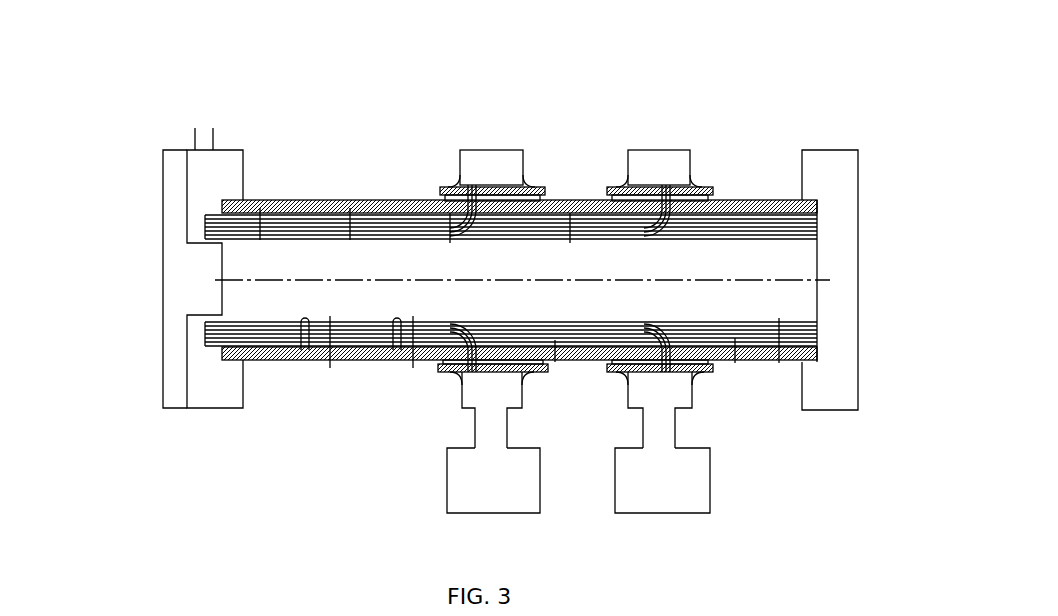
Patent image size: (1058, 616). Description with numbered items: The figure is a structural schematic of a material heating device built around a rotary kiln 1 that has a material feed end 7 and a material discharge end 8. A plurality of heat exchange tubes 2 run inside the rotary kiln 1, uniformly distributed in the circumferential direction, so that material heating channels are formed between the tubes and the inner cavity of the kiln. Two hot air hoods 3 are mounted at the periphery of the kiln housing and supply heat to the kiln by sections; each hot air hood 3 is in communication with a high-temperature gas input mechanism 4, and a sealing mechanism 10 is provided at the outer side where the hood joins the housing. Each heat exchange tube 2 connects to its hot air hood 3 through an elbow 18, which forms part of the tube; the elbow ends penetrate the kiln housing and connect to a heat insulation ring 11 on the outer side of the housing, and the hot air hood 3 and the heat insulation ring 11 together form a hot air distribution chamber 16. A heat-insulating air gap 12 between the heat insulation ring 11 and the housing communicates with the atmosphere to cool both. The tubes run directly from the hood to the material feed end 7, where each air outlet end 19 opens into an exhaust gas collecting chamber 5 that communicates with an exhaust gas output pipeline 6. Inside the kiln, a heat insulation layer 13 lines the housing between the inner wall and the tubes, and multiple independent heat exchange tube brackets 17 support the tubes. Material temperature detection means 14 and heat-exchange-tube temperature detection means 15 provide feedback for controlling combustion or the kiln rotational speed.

The rotary kiln 1 is at (347, 200).
The heat exchange tubes 2 is at (552, 230).
The hot air hood 3 is at (650, 150).
The high-temperature gas input mechanism 4 is at (632, 503).
The exhaust gas collecting chamber 5 is at (222, 177).
The exhaust gas output pipeline 6 is at (203, 140).
The material feed end 7 is at (175, 268).
The material discharge end 8 is at (840, 263).
The sealing mechanism 10 is at (690, 185).
The heat insulation ring 11 is at (702, 373).
The heat-insulating air gap 12 is at (711, 367).
The heat insulation layer 13 is at (767, 362).
The material temperature detection means 14 is at (330, 362).
The heat-exchange-tube temperature detection means 15 is at (285, 362).
The hot air distribution chamber 16 is at (485, 163).
The heat exchange tube brackets 17 is at (260, 238).
The elbow 18 is at (670, 325).
The air outlet end 19 is at (215, 218).